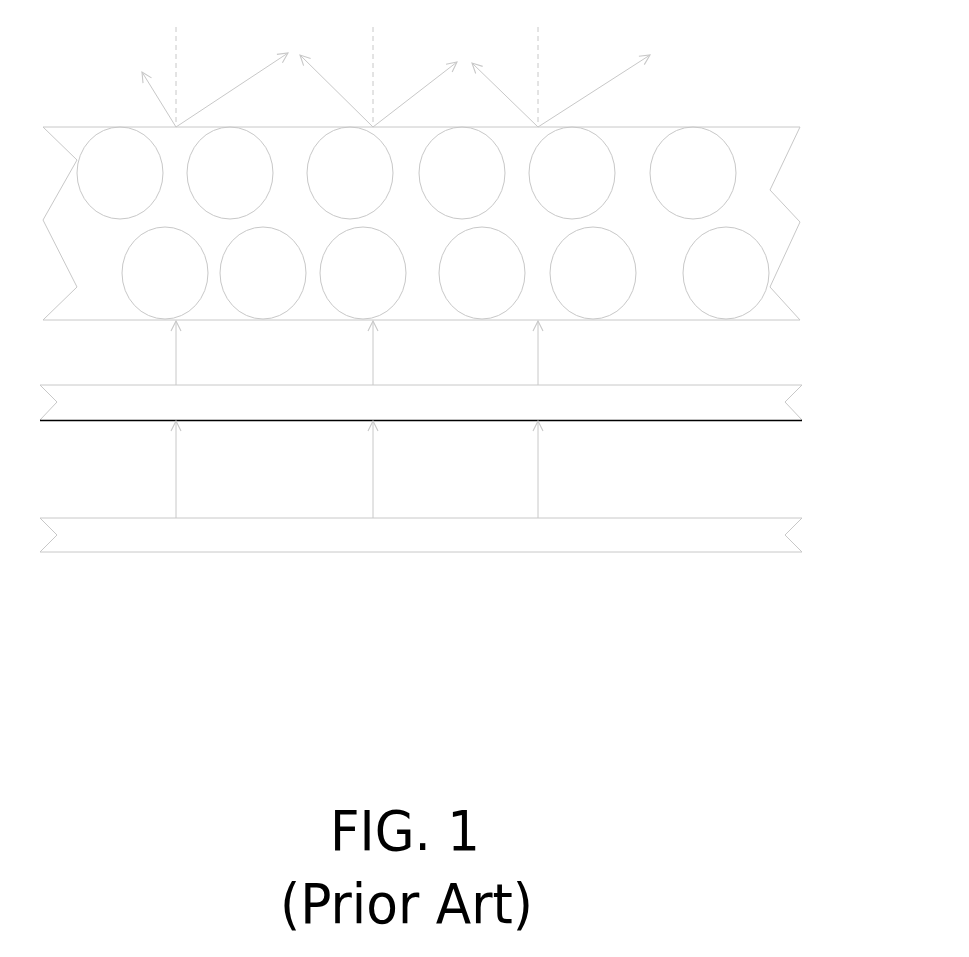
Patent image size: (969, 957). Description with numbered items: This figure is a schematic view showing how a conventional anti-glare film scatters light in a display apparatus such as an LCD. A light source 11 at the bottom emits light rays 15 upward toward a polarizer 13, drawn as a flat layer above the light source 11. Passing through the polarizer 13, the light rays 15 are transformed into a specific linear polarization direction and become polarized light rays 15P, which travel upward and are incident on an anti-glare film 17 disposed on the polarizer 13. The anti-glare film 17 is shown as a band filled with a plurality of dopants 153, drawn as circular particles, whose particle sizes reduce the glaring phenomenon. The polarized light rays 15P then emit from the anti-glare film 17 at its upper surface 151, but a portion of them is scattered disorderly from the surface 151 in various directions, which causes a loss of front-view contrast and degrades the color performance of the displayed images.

The light source 11 is at (788, 538).
The polarizer 13 is at (788, 408).
The light rays 15 is at (167, 458).
The polarized light rays 15P is at (167, 368).
The anti-glare film 17 is at (770, 155).
The surface 151 is at (125, 116).
The dopants 153 is at (690, 143).